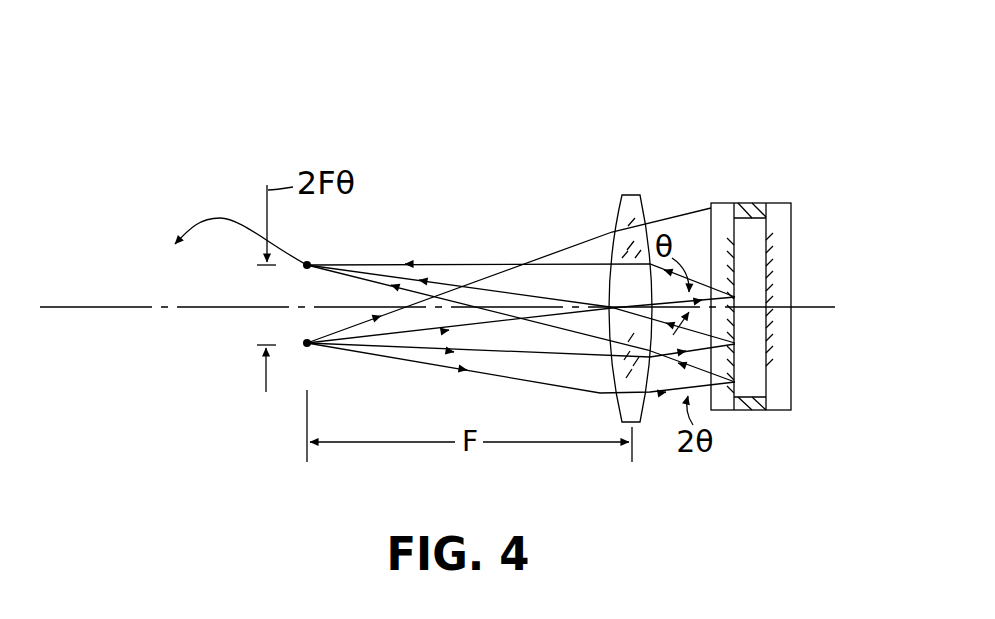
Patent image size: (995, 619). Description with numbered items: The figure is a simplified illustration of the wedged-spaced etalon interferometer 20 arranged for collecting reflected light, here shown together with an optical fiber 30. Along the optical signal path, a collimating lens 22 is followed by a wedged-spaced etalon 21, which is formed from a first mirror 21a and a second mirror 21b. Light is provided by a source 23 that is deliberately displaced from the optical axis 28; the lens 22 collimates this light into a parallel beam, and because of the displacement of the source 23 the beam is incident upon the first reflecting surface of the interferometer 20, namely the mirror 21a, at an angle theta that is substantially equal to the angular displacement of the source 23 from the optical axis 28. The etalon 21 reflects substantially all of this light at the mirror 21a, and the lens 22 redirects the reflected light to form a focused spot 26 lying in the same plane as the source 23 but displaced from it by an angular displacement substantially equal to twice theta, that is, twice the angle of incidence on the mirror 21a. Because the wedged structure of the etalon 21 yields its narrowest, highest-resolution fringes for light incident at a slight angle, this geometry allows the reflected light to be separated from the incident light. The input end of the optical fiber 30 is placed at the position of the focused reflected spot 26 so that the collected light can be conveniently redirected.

The wedged-spaced etalon interferometer 20 is at (411, 101).
The wedged-spaced etalon 21 is at (772, 319).
The mirror 21a is at (725, 412).
The mirror 21b is at (785, 410).
The collimating lens 22 is at (631, 193).
The source 23 is at (310, 348).
The focused spot 26 is at (309, 262).
The optical axis 28 is at (80, 309).
The optical fiber 30 is at (213, 217).